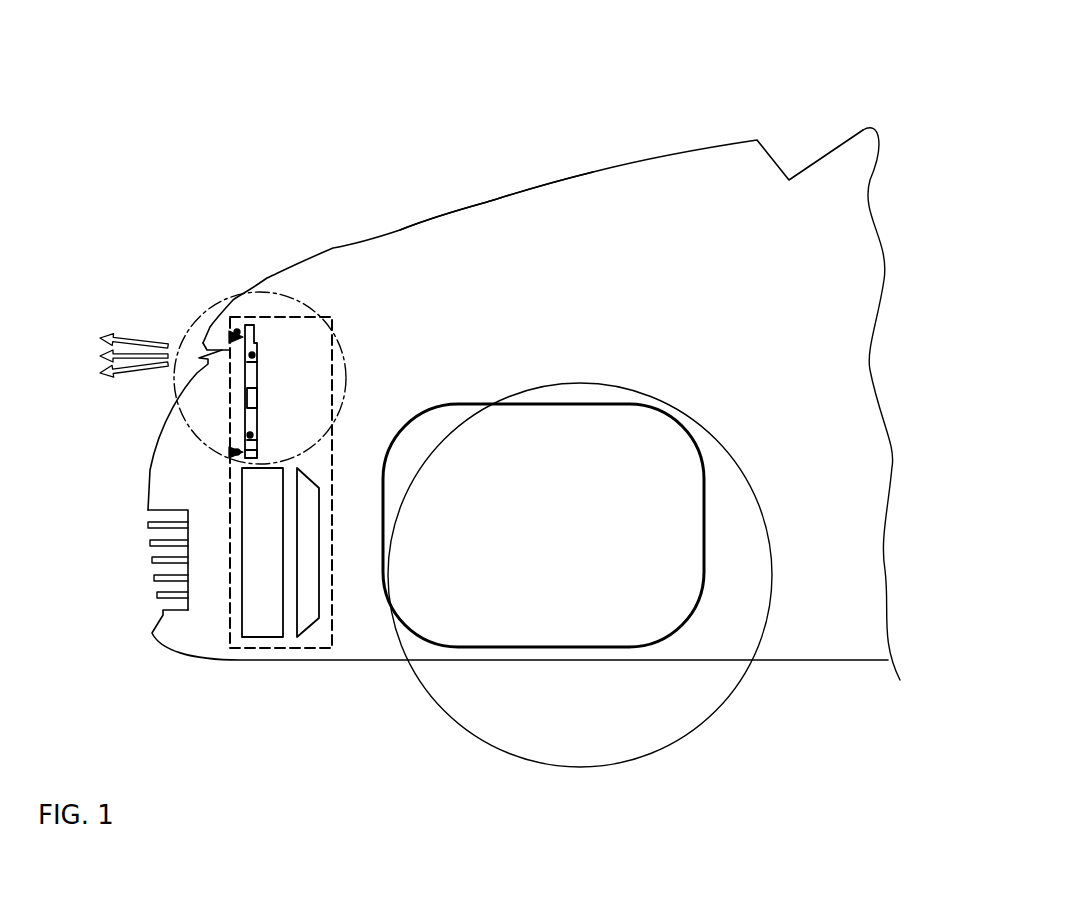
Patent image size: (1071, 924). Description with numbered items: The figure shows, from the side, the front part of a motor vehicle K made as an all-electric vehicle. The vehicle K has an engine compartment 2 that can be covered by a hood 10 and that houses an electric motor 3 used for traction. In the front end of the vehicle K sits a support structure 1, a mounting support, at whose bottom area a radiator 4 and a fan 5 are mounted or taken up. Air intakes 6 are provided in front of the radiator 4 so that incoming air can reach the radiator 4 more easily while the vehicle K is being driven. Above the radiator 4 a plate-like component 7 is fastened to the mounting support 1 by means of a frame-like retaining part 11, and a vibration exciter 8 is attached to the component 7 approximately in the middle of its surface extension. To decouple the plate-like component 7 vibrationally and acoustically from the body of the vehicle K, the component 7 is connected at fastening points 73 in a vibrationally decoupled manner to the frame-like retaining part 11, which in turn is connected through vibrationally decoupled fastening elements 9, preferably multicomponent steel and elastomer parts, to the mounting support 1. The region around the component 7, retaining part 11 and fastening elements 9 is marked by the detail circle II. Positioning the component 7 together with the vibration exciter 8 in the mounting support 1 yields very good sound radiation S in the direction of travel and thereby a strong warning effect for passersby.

The support structure 1 is at (230, 612).
The engine compartment 2 is at (596, 205).
The electric motor 3 is at (676, 625).
The radiator 4 is at (252, 637).
The fan 5 is at (307, 627).
The air intakes 6 is at (160, 566).
The plate-like component 7 is at (245, 375).
The vibration exciter 8 is at (255, 397).
The fastening elements 9 is at (237, 332).
The hood 10 is at (487, 202).
The frame-like retaining part 11 is at (255, 452).
The fastening points 73 is at (252, 355).
The motor vehicle K is at (765, 100).
The sound radiation S is at (103, 315).
The section detail II is at (347, 372).